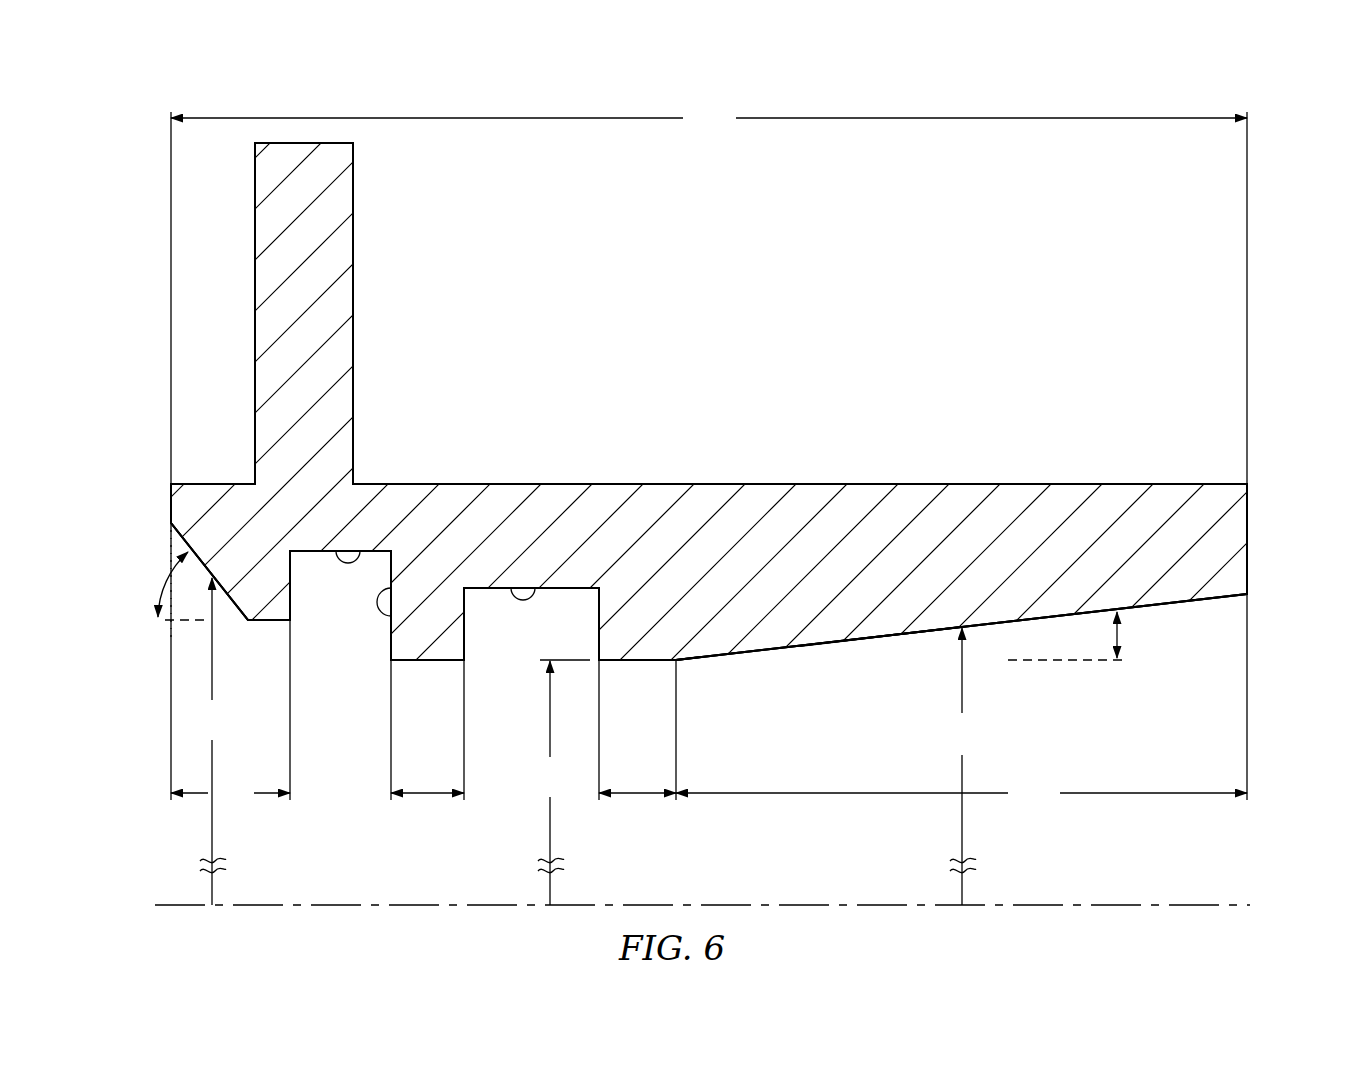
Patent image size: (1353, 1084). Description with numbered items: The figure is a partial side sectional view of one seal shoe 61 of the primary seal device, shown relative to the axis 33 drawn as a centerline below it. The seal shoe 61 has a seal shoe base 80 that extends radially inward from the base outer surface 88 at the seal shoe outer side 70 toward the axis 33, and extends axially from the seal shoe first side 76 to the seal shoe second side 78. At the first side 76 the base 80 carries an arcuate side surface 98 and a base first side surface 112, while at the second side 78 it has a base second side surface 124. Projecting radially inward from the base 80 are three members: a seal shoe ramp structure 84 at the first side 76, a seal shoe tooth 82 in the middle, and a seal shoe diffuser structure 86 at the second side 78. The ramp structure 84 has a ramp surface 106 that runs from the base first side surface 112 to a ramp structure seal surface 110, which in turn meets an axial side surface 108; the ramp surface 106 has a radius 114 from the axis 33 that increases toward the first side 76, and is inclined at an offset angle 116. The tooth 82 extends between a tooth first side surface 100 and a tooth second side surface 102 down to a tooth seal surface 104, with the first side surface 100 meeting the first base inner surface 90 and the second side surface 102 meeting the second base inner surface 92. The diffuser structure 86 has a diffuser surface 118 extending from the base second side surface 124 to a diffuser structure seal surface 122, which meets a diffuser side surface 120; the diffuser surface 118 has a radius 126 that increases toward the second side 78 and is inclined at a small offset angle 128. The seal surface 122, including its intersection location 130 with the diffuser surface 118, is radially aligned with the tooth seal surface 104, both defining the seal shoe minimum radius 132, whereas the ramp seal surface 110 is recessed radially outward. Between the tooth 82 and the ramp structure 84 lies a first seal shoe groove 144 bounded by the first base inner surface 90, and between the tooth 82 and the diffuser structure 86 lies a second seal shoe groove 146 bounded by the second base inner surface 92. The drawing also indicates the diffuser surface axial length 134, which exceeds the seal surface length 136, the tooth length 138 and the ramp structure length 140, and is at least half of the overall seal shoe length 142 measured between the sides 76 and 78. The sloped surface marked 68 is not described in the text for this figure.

The seal shoe 61 is at (130, 122).
The axis 33 is at (160, 903).
The sloped surface 68 is at (763, 688).
The seal shoe outer side 70 is at (800, 439).
The base outer surface 88 is at (674, 484).
The seal shoe first side 76 is at (121, 469).
The base first side surface 112 is at (171, 503).
The seal shoe second side 78 is at (1294, 522).
The base second side surface 124 is at (1247, 538).
The seal shoe base 80 is at (645, 534).
The seal shoe tooth 82 is at (417, 636).
The seal shoe ramp structure 84 is at (247, 594).
The seal shoe diffuser structure 86 is at (719, 628).
The first base inner surface 90 is at (364, 548).
The second base inner surface 92 is at (532, 588).
The side surface 98 is at (255, 332).
The tooth first side surface 100 is at (380, 588).
The tooth second side surface 102 is at (464, 628).
The tooth seal surface 104 is at (437, 663).
The ramp structure ramp surface 106 is at (186, 541).
The ramp structure side surface 108 is at (290, 593).
The ramp structure seal surface 110 is at (270, 623).
The ramp structure radius 114 is at (215, 741).
The ramp structure offset angle 116 is at (167, 588).
The diffuser structure diffuser surface 118 is at (878, 642).
The diffuser structure side surface 120 is at (599, 624).
The diffuser structure seal surface 122 is at (633, 663).
The diffuser structure radius 126 is at (962, 766).
The diffuser structure offset angle 128 is at (1119, 634).
The intersection location 130 is at (679, 658).
The seal shoe minimum radius 132 is at (558, 782).
The diffuser surface axial length 134 is at (961, 700).
The seal surface axial length 136 is at (637, 797).
The tooth length 138 is at (430, 797).
The ramp structure length 140 is at (230, 664).
The seal shoe length 142 is at (709, 295).
The first seal shoe groove 144 is at (327, 620).
The second seal shoe groove 146 is at (513, 652).